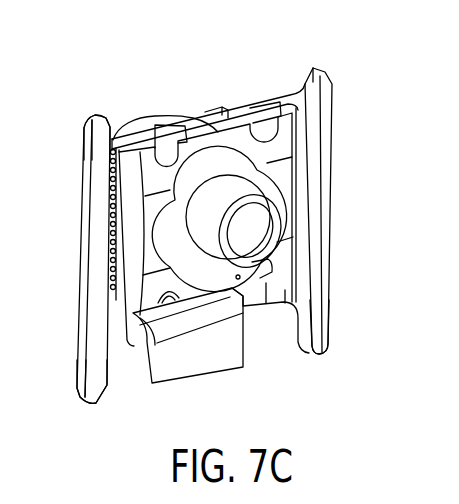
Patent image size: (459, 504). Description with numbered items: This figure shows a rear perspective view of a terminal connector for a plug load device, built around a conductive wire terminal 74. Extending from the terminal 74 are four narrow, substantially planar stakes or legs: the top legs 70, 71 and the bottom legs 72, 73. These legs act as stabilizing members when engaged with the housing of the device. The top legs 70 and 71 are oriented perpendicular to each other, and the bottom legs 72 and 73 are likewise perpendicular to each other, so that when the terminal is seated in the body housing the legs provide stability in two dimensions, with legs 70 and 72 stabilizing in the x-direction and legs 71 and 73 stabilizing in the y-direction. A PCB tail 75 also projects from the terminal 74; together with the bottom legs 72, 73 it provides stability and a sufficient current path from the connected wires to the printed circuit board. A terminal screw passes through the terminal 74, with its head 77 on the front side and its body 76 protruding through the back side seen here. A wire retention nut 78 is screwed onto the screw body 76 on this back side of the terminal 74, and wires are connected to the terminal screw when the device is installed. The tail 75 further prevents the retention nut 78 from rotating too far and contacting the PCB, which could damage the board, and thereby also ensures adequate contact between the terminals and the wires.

The top leg 70 is at (247, 198).
The top leg 71 is at (102, 133).
The bottom leg 72 is at (308, 328).
The bottom leg 73 is at (92, 380).
The conductive wire terminal 74 is at (76, 237).
The PCB tail 75 is at (213, 357).
The body of the screw 76 is at (212, 233).
The head of the terminal screw 77 is at (160, 122).
The wire retention nut 78 is at (280, 213).